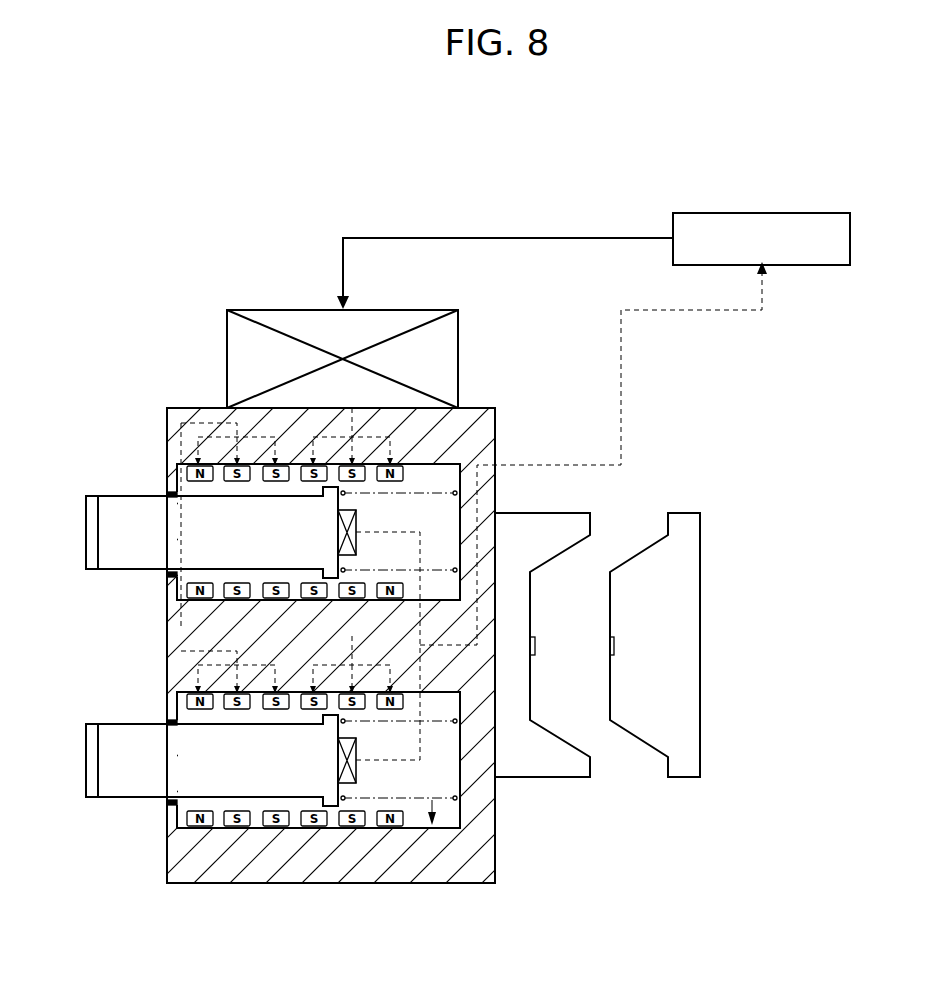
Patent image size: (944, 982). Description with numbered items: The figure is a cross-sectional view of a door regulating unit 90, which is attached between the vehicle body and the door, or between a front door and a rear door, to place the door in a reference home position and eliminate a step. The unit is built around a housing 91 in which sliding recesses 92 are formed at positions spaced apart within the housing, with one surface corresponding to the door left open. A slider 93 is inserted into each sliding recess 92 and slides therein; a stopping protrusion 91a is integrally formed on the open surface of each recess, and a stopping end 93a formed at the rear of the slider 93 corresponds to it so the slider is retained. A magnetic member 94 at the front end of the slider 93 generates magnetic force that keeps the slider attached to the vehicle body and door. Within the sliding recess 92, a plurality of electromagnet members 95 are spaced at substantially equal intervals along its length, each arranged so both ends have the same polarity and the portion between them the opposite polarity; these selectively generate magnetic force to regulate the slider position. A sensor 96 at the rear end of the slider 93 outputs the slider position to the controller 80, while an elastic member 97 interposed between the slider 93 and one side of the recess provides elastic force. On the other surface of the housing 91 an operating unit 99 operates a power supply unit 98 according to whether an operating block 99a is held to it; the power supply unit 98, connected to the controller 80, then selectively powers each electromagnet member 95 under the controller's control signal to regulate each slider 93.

The controller 80 is at (762, 213).
The door regulating unit 90 is at (124, 283).
The housing 91 is at (480, 408).
The stopping protrusion 91a is at (170, 590).
The sliding recess 92 is at (440, 775).
The slider 93 is at (118, 500).
The stopping end 93a is at (333, 578).
The magnetic member 94 is at (90, 526).
The electromagnet member 95 is at (238, 483).
The sensor 96 is at (350, 785).
The elastic member 97 is at (410, 800).
The power supply unit 98 is at (268, 308).
The operating unit 99 is at (537, 765).
The operating block 99a is at (683, 643).